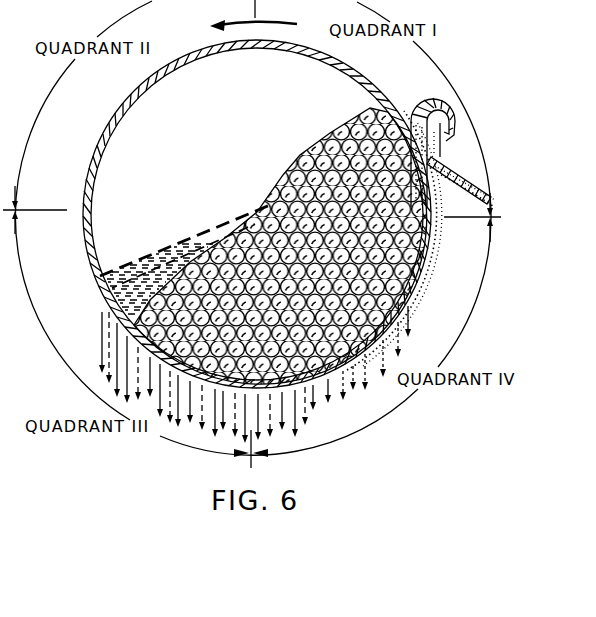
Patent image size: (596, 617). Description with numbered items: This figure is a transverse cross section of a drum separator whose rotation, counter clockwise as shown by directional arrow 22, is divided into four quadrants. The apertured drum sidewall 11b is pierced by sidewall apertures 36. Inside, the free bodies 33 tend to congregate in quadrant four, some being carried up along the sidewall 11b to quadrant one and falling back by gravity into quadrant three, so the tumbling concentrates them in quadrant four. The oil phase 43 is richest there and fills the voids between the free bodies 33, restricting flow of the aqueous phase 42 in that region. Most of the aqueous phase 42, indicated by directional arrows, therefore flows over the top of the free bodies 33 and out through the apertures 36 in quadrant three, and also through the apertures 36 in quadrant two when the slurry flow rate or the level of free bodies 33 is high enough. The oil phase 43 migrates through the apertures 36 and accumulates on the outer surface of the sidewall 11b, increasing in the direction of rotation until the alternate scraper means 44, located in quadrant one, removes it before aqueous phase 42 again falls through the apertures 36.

The directional arrow 22 is at (266, 22).
The sidewall apertures 36 is at (212, 87).
The apertured drum sidewall 11b is at (100, 163).
The free bodies 33 is at (313, 160).
The alternate scraper means 44 is at (418, 98).
The oil phase 43 is at (462, 158).
The aqueous phase 42 is at (100, 345).